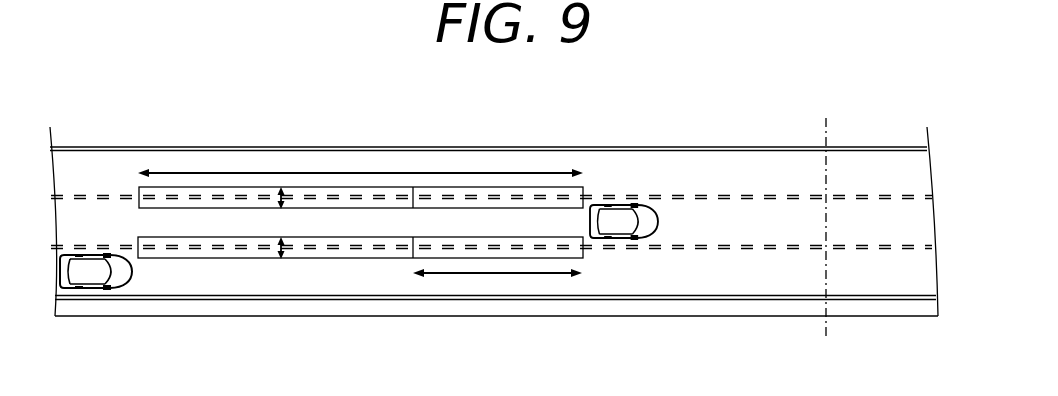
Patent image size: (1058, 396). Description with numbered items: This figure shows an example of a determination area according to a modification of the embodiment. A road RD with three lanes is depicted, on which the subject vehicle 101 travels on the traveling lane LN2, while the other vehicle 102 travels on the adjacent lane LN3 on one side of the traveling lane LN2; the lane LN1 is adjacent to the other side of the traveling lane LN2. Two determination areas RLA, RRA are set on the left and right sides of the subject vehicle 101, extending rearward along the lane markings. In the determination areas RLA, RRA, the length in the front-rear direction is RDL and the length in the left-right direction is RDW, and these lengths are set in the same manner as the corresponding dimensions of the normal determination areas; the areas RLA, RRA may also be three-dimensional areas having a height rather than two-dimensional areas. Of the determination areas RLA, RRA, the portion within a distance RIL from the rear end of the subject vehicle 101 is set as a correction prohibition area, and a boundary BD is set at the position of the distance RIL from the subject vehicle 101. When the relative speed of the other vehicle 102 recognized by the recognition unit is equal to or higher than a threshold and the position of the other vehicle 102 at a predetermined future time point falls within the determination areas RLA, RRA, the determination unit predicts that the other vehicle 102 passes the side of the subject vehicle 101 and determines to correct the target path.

The road RD is at (888, 167).
The lane LN1 is at (718, 163).
The traveling lane LN2 is at (782, 213).
The adjacent lane LN3 is at (757, 277).
The boundary BD is at (828, 135).
The determination area RLA is at (583, 191).
The determination area RRA is at (585, 258).
The length in the front-rear direction RDL is at (315, 173).
The distance RIL is at (477, 275).
The length in the left-right direction RDW is at (277, 197).
The subject vehicle 101 is at (658, 223).
The other vehicle 102 is at (88, 288).